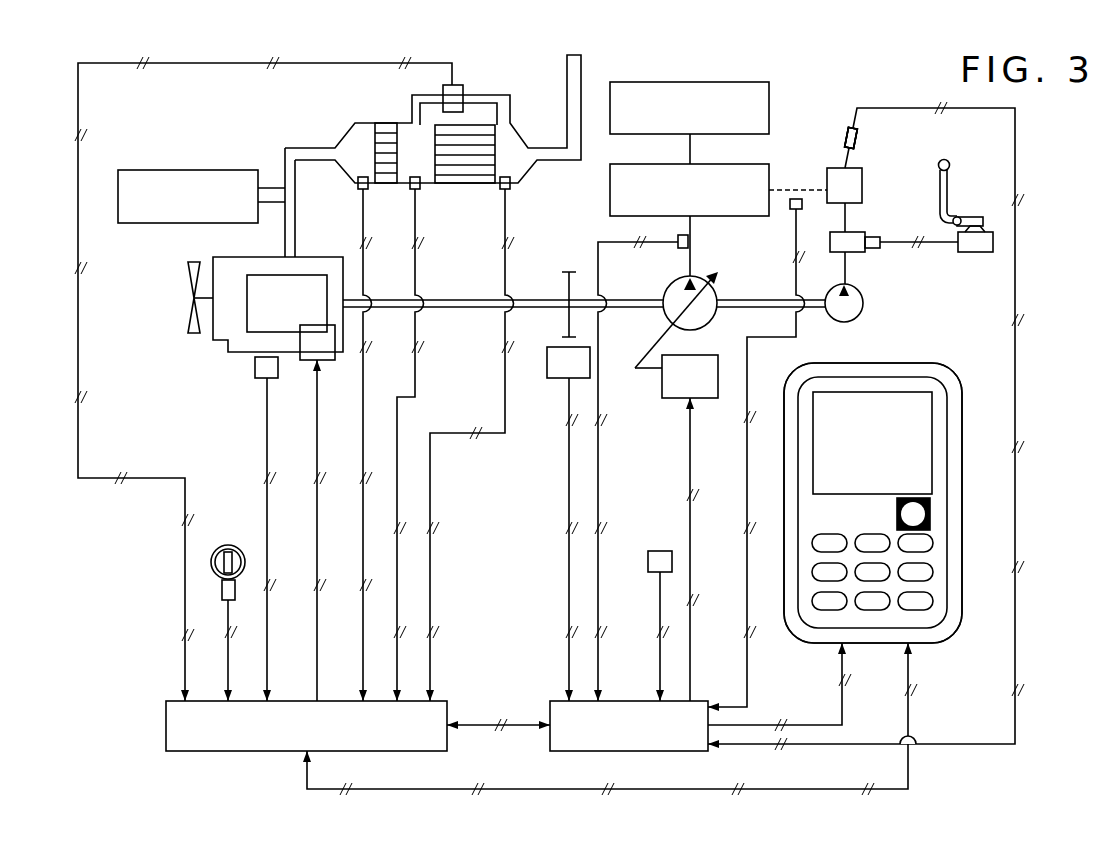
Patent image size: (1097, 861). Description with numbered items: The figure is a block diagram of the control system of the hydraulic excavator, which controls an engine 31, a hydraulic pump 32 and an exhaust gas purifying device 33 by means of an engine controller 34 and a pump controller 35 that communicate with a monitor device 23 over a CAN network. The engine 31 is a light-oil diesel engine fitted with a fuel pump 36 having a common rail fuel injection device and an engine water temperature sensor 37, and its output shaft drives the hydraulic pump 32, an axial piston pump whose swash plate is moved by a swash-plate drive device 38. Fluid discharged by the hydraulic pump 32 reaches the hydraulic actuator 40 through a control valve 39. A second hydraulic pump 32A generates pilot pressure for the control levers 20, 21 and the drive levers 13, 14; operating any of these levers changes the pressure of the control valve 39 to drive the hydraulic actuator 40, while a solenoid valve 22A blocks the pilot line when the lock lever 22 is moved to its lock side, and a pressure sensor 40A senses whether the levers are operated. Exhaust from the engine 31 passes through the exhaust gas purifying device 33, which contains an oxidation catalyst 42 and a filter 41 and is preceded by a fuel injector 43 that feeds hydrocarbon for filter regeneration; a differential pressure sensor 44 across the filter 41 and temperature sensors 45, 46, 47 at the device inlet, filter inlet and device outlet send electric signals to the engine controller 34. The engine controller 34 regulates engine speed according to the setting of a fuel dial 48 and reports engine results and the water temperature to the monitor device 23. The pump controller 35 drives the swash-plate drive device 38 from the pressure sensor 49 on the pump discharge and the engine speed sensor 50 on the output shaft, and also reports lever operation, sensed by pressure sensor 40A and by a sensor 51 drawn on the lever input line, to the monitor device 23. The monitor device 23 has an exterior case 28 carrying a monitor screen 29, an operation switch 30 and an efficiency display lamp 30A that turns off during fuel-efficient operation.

The drive lever 13 is at (851, 137).
The drive lever 14 is at (851, 137).
The control lever 20 is at (857, 138).
The control lever 21 is at (851, 137).
The lock lever 22 is at (948, 187).
The solenoid valve 22A is at (860, 232).
The monitor device 23 is at (900, 363).
The exterior case 28 is at (962, 408).
The monitor screen 29 is at (917, 400).
The operation switch 30 is at (933, 570).
The efficiency display lamp 30A is at (930, 505).
The engine 31 is at (228, 345).
The hydraulic pump 32 is at (712, 290).
The hydraulic pump 32A is at (863, 300).
The exhaust gas purifying device 33 is at (527, 130).
The engine controller 34 is at (250, 753).
The pump controller 35 is at (643, 752).
The fuel pump 36 is at (328, 361).
The engine water temperature sensor 37 is at (270, 380).
The swash-plate drive device 38 is at (668, 400).
The control valve 39 is at (769, 172).
The hydraulic actuator 40 is at (769, 103).
The pressure sensor 40A is at (790, 201).
The filter 41 is at (483, 186).
The oxidation catalyst 42 is at (385, 186).
The fuel injector 43 is at (193, 170).
The differential pressure sensor 44 is at (462, 85).
The temperature sensor 45 is at (358, 186).
The temperature sensor 46 is at (420, 186).
The temperature sensor 47 is at (510, 186).
The fuel dial 48 is at (225, 545).
The pressure sensor 49 is at (683, 249).
The engine speed sensor 50 is at (553, 380).
The operating lever sensor 51 is at (658, 548).